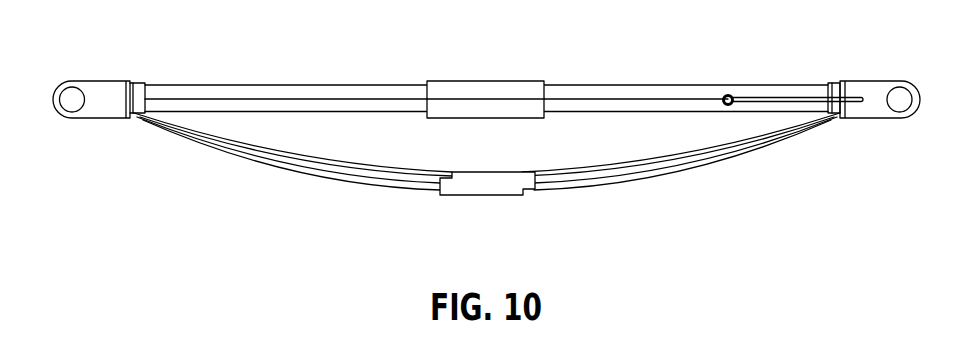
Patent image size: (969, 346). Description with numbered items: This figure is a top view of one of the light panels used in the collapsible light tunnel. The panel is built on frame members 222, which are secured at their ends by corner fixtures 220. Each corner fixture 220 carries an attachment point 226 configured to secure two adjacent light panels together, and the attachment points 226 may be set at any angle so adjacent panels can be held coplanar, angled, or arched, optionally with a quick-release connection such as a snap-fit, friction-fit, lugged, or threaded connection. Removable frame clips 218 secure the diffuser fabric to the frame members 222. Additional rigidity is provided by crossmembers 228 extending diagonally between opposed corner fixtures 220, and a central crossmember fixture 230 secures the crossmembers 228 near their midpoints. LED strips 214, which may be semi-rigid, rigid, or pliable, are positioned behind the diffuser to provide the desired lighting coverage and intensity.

The LED strips 214 is at (483, 195).
The removable frame clips 218 is at (487, 81).
The corner fixtures 220 is at (872, 81).
The frame members 222 is at (298, 84).
The attachment point 226 is at (70, 91).
The crossmembers 228 is at (690, 172).
The central crossmember fixture 230 is at (733, 94).